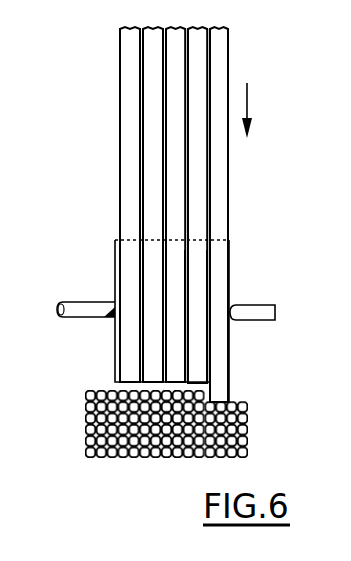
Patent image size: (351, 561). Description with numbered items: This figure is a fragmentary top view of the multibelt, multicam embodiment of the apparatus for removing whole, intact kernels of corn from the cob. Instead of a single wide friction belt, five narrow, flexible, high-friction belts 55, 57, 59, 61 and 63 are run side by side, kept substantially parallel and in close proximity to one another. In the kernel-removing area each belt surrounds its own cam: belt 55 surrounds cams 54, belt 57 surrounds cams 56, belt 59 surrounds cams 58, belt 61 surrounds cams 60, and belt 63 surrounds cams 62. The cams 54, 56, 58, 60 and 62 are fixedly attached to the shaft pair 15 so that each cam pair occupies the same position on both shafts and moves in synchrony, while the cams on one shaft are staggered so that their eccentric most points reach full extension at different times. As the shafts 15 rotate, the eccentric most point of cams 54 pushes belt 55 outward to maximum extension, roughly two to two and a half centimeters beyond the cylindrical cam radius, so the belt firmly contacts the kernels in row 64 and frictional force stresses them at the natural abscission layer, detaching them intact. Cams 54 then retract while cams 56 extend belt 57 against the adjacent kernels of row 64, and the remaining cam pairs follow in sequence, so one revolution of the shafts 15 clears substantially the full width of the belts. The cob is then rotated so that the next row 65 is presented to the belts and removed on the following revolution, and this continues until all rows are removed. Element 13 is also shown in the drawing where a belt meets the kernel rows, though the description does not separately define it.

The lower strip extension 13 is at (228, 394).
The shaft pair 15 is at (265, 305).
The cam 54 is at (208, 366).
The belt 55 is at (222, 198).
The cam 56 is at (185, 335).
The belt 57 is at (197, 172).
The cam 58 is at (162, 293).
The belt 59 is at (178, 148).
The cam 60 is at (140, 272).
The belt 61 is at (153, 107).
The cam 62 is at (114, 257).
The belt 63 is at (123, 70).
The row of kernels 64 is at (140, 421).
The next row of kernels 65 is at (86, 404).